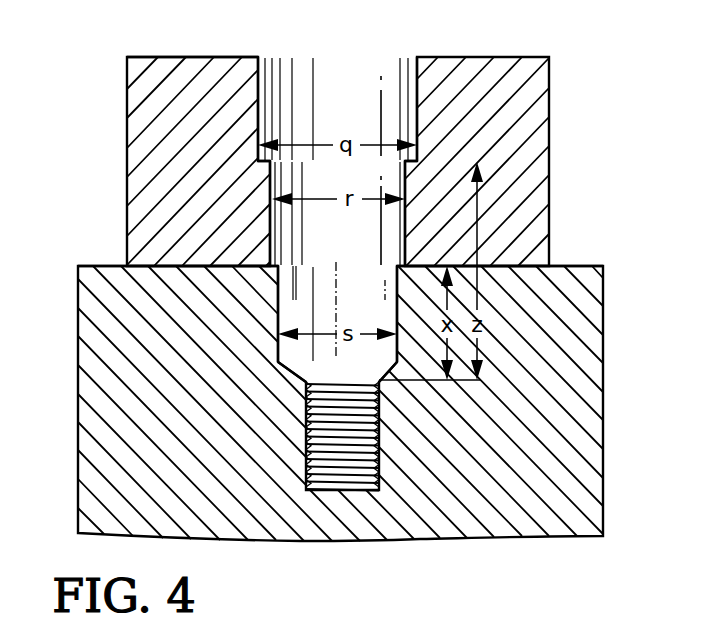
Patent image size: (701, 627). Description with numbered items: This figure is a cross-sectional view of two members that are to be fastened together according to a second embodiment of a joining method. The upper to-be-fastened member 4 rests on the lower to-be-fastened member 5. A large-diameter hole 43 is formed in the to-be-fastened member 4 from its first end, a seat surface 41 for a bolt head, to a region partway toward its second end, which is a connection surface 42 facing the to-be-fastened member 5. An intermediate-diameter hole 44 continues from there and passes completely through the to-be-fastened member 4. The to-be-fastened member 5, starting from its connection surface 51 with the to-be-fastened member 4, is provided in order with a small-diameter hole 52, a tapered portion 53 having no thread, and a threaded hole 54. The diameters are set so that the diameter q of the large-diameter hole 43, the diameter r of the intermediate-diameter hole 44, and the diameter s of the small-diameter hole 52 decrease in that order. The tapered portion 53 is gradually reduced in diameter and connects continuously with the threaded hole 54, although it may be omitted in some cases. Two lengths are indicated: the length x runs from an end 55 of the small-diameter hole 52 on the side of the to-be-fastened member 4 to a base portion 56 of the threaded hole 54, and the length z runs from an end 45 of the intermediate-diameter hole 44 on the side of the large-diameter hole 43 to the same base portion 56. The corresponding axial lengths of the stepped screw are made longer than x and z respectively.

The to-be-fastened member 4 is at (513, 56).
The to-be-fastened member 5 is at (603, 318).
The seat surface 41 is at (177, 56).
The connection surface 42 is at (128, 268).
The large-diameter hole 43 is at (416, 84).
The intermediate-diameter hole 44 is at (395, 228).
The end of the intermediate-diameter hole 45 is at (373, 152).
The connection surface 51 is at (587, 263).
The small-diameter hole 52 is at (293, 302).
The tapered portion 53 is at (343, 383).
The threaded hole 54 is at (348, 478).
The end of the small-diameter hole 55 is at (296, 278).
The base portion of the threaded hole 56 is at (325, 383).